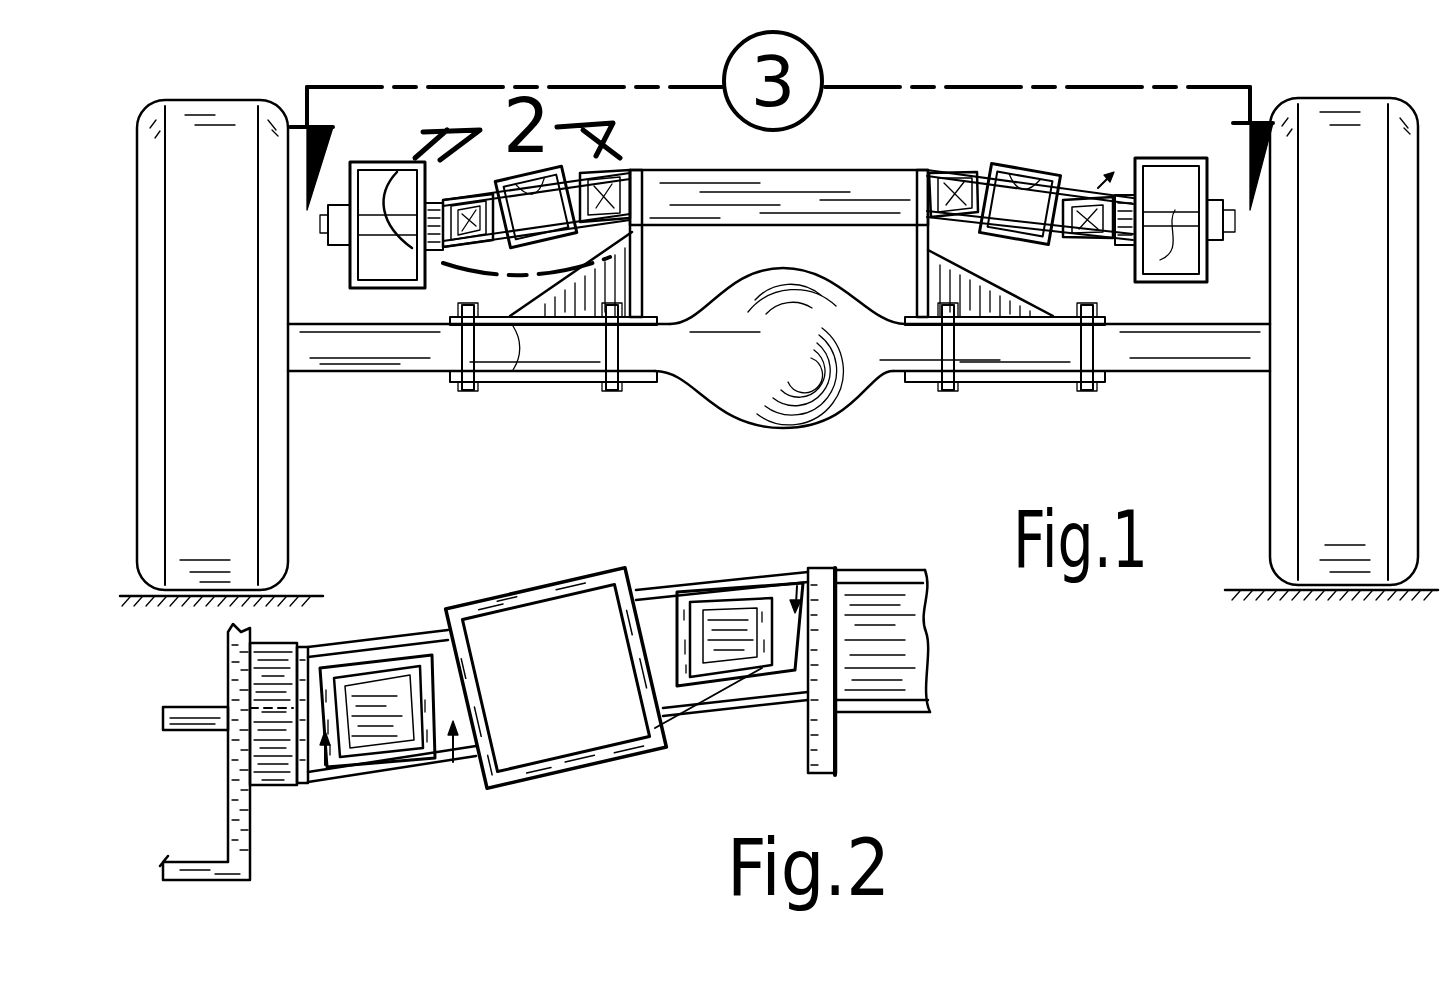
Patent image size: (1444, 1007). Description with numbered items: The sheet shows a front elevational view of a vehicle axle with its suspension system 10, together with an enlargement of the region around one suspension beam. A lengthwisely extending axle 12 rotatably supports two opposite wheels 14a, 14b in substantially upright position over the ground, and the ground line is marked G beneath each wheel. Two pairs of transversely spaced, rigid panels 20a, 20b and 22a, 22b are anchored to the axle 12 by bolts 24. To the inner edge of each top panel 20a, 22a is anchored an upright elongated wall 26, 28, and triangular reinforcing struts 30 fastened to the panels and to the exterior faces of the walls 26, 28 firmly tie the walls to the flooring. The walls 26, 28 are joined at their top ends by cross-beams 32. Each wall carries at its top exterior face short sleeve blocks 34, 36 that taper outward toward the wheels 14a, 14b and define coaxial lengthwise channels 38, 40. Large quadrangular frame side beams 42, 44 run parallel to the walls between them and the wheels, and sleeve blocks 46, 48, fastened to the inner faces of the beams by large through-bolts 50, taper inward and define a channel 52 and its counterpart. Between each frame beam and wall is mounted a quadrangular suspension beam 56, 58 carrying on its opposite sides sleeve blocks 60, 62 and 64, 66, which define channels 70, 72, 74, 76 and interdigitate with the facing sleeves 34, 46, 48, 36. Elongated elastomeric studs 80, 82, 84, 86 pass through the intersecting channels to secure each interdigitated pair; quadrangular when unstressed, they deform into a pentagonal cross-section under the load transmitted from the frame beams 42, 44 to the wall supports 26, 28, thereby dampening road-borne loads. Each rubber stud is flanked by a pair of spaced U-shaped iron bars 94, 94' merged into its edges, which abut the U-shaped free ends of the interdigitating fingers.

In FIG. 1, the suspension system 10 is at (632, 154).
In FIG. 2, the suspension system 10 is at (593, 788).
In FIG. 1, the axle 12 is at (420, 350).
In FIG. 1, the wheel 14a is at (210, 153).
In FIG. 1, the wheel 14b is at (1340, 145).
In FIG. 1, the top horizontal panel 20a is at (508, 370).
In FIG. 1, the panel 20b is at (572, 378).
In FIG. 1, the top horizontal panel 22a is at (1007, 333).
In FIG. 1, the panel 22b is at (1050, 385).
In FIG. 1, the bolt 24 is at (606, 392).
In FIG. 1, the upright wall 26 is at (642, 236).
In FIG. 2, the upright wall 26 is at (808, 722).
In FIG. 1, the upright wall 28 is at (917, 240).
In FIG. 1, the reinforcing strut 30 is at (600, 292).
In FIG. 1, the cross-beam 32 is at (825, 187).
In FIG. 2, the cross-beam 32 is at (880, 640).
In FIG. 2, the sleeve block 34 is at (770, 597).
In FIG. 1, the sleeve block 36 is at (924, 178).
In FIG. 2, the lengthwise channel 38 is at (800, 574).
In FIG. 1, the lengthwise channel 40 is at (952, 190).
In FIG. 1, the bottom side beam 42 is at (382, 162).
In FIG. 2, the bottom side beam 42 is at (233, 747).
In FIG. 1, the side beam 44 is at (1178, 160).
In FIG. 2, the sleeve block 46 is at (337, 650).
In FIG. 1, the sleeve block 48 is at (1105, 243).
In FIG. 1, the through-bolt 50 is at (1175, 230).
In FIG. 2, the through-bolt 50 is at (190, 712).
In FIG. 2, the coaxial channel 52 is at (327, 782).
In FIG. 1, the suspension beam 56 is at (549, 172).
In FIG. 2, the suspension beam 56 is at (525, 608).
In FIG. 1, the suspension beam 58 is at (1088, 200).
In FIG. 2, the sleeve block 60 is at (638, 588).
In FIG. 2, the sleeve block 62 is at (434, 640).
In FIG. 1, the sleeve block 64 is at (1114, 195).
In FIG. 1, the sleeve block 66 is at (1022, 180).
In FIG. 2, the coaxial channel 70 is at (660, 626).
In FIG. 2, the coaxial channel 72 is at (453, 772).
In FIG. 1, the coaxial channel 74 is at (1050, 240).
In FIG. 1, the coaxial channel 76 is at (1040, 178).
In FIG. 1, the elastomeric stud 80 is at (488, 188).
In FIG. 2, the elastomeric stud 80 is at (740, 657).
In FIG. 1, the elastomeric stud 82 is at (457, 198).
In FIG. 2, the elastomeric stud 82 is at (367, 703).
In FIG. 1, the elastomeric stud 84 is at (1090, 232).
In FIG. 1, the elastomeric stud 86 is at (963, 195).
In FIG. 2, the U-shaped iron bar 94 is at (740, 604).
In FIG. 2, the U-shaped iron bar 94' is at (751, 561).
In FIG. 1, the ground G is at (305, 596).